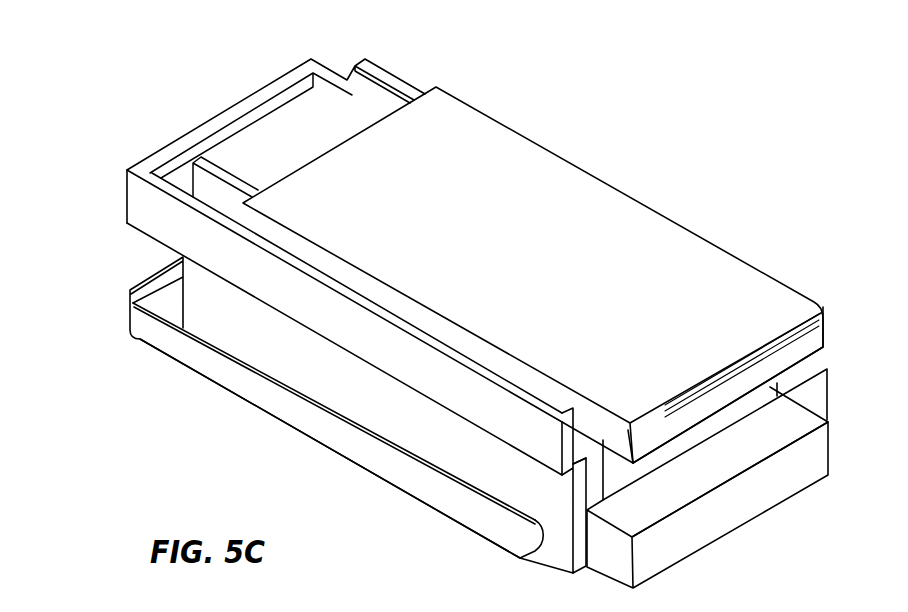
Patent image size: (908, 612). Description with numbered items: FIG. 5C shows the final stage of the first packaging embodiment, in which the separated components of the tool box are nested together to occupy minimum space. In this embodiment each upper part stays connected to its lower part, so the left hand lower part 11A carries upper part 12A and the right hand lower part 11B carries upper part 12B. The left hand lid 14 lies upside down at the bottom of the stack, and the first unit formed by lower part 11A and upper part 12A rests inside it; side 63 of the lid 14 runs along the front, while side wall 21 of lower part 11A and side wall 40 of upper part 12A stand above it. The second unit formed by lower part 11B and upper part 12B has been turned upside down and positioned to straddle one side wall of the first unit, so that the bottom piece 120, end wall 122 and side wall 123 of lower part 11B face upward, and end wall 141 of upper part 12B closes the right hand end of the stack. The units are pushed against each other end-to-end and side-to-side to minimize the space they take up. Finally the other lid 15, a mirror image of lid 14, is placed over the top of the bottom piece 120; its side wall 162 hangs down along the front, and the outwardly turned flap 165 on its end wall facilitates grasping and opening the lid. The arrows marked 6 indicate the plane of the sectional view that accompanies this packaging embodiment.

The section line 6 is at (672, 212).
The lower part 11A is at (225, 348).
The lower part 11B is at (783, 395).
The upper part 12A is at (124, 202).
The upper part 12B is at (718, 555).
The lid 14 is at (117, 327).
The lid 15 is at (495, 232).
The side wall 21 is at (330, 387).
The side wall 40 is at (375, 347).
The side 63 is at (348, 459).
The bottom piece 120 is at (330, 133).
The end wall 122 is at (619, 476).
The side wall 123 is at (211, 184).
The end wall 141 is at (745, 513).
The side wall 162 is at (617, 437).
The outwardly turned flap 165 is at (819, 358).